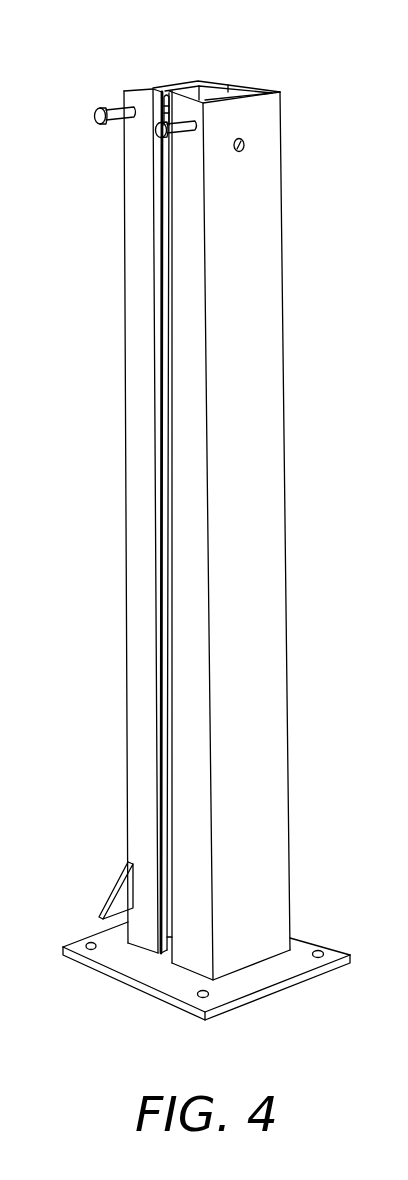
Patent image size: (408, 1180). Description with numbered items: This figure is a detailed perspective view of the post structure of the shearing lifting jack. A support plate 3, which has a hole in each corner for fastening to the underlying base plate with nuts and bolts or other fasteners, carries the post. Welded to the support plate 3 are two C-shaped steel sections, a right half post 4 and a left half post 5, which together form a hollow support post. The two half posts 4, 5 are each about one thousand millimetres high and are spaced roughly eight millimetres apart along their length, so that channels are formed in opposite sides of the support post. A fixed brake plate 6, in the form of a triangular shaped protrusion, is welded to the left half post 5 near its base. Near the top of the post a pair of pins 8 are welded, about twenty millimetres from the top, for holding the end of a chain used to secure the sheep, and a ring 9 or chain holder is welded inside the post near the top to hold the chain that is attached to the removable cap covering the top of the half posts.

The support plate 3 is at (157, 975).
The right half post 4 is at (257, 447).
The left half post 5 is at (138, 453).
The fixed brake plate 6 is at (110, 898).
The pins 8 is at (156, 132).
The ring 9 is at (168, 97).